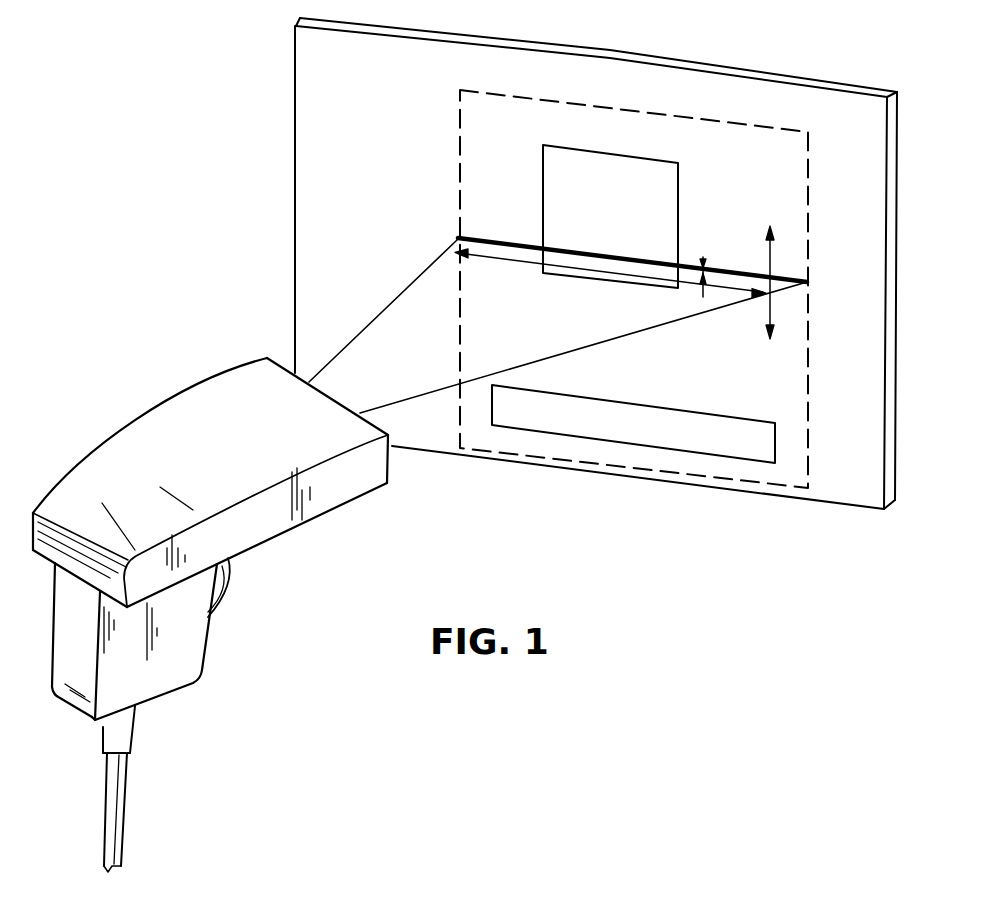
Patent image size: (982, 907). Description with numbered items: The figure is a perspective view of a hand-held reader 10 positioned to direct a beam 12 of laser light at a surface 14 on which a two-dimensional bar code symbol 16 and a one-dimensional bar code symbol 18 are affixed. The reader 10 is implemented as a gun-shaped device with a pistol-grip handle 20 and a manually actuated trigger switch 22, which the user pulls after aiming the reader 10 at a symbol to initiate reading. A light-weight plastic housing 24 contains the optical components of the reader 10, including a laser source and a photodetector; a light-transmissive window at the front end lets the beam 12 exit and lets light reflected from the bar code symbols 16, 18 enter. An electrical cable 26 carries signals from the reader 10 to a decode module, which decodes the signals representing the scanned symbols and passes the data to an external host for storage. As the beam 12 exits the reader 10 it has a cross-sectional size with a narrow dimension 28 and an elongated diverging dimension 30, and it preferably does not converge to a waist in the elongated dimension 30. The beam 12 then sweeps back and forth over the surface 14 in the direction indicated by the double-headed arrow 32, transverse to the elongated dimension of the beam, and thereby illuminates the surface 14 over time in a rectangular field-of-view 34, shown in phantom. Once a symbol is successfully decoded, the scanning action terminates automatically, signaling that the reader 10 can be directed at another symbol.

The hand-held reader 10 is at (210, 615).
The beam 12 is at (368, 324).
The surface 14 is at (627, 77).
The two-dimensional bar code symbol 16 is at (667, 182).
The one-dimensional bar code symbol 18 is at (720, 430).
The pistol-grip handle 20 is at (202, 653).
The trigger switch 22 is at (216, 578).
The housing 24 is at (338, 490).
The electrical cable 26 is at (113, 806).
The narrow dimension 28 is at (705, 250).
The elongated diverging dimension 30 is at (492, 258).
The double-headed arrow 32 is at (769, 245).
The rectangular field-of-view 34 is at (462, 97).